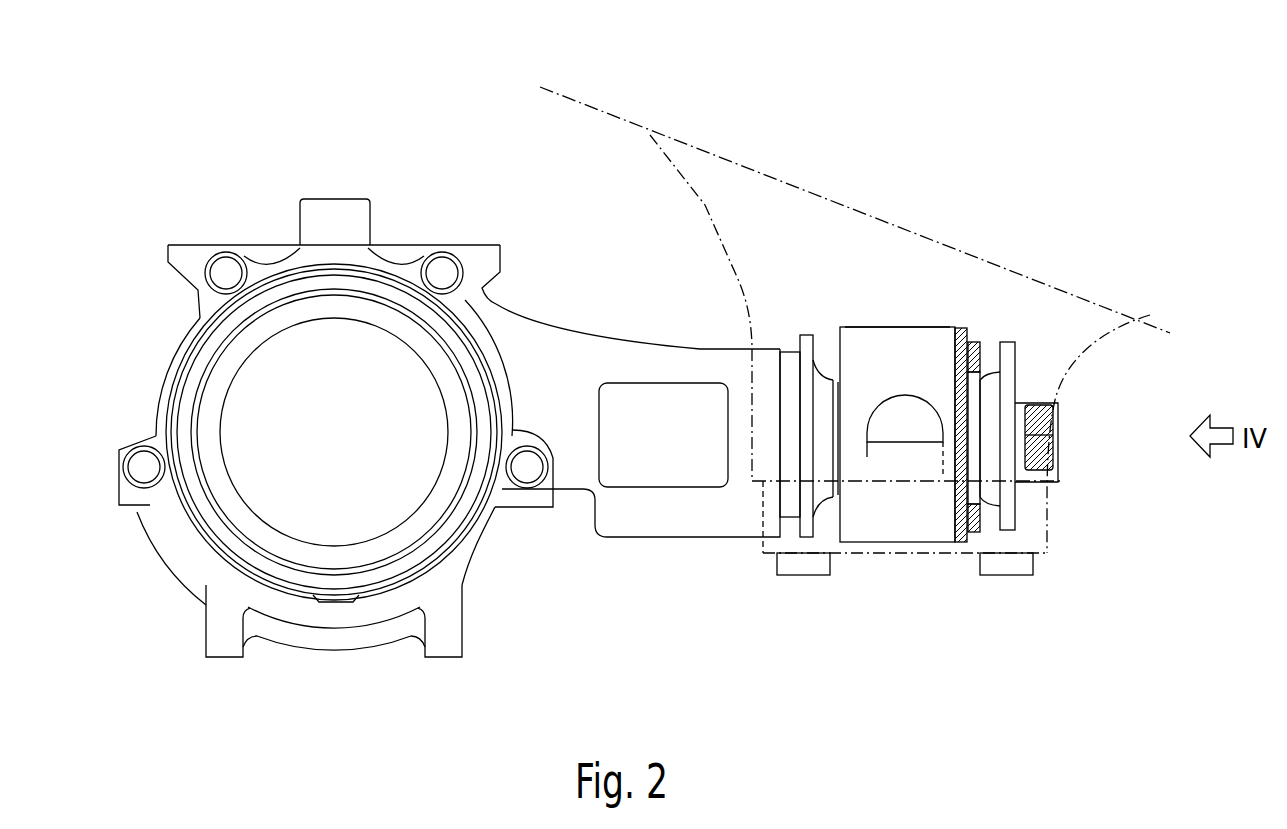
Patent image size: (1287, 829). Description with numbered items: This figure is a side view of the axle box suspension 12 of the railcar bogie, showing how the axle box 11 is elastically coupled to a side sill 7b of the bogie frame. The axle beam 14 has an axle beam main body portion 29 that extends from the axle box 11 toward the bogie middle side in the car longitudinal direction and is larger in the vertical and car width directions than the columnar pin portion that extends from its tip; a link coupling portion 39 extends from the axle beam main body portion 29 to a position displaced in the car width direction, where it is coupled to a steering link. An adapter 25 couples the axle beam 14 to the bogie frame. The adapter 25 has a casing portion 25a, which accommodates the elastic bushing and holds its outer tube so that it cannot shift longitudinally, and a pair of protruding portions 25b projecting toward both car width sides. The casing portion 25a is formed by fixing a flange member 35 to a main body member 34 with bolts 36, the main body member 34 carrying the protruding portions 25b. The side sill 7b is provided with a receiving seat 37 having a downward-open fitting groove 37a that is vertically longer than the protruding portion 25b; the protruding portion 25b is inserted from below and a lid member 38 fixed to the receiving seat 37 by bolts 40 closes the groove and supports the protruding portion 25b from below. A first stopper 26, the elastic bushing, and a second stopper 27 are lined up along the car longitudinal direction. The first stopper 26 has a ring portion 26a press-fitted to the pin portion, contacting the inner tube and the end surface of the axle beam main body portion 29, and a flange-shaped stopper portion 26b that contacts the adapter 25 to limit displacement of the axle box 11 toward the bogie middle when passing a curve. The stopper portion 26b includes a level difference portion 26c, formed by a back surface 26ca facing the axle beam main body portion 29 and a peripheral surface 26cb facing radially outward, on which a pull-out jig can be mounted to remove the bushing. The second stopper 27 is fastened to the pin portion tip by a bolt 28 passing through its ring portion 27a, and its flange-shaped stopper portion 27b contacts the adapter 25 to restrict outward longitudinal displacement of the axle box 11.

The axle box 11 is at (168, 255).
The axle box suspension 12 is at (263, 148).
The side sill 7b is at (565, 97).
The axle beam 14 is at (678, 537).
The adapter 25 is at (904, 405).
The casing portion 25a is at (884, 333).
The protruding portion 25b is at (908, 427).
The first stopper 26 is at (770, 353).
The ring portion 26a is at (820, 365).
The stopper portion 26b is at (800, 335).
The level difference portion 26c is at (749, 277).
The back surface 26ca is at (800, 356).
The peripheral surface 26cb is at (782, 352).
The second stopper 27 is at (1071, 433).
The ring portion 27a is at (1005, 342).
The stopper portion 27b is at (997, 352).
The bolt 28 is at (1048, 420).
The axle beam main body portion 29 is at (617, 338).
The main body member 34 is at (945, 327).
The flange member 35 is at (972, 335).
The bolt 36 is at (990, 345).
The receiving seat 37 is at (717, 240).
The fitting groove 37a is at (867, 457).
The lid member 38 is at (1050, 507).
The link coupling portion 39 is at (625, 487).
The bolt 40 is at (792, 577).